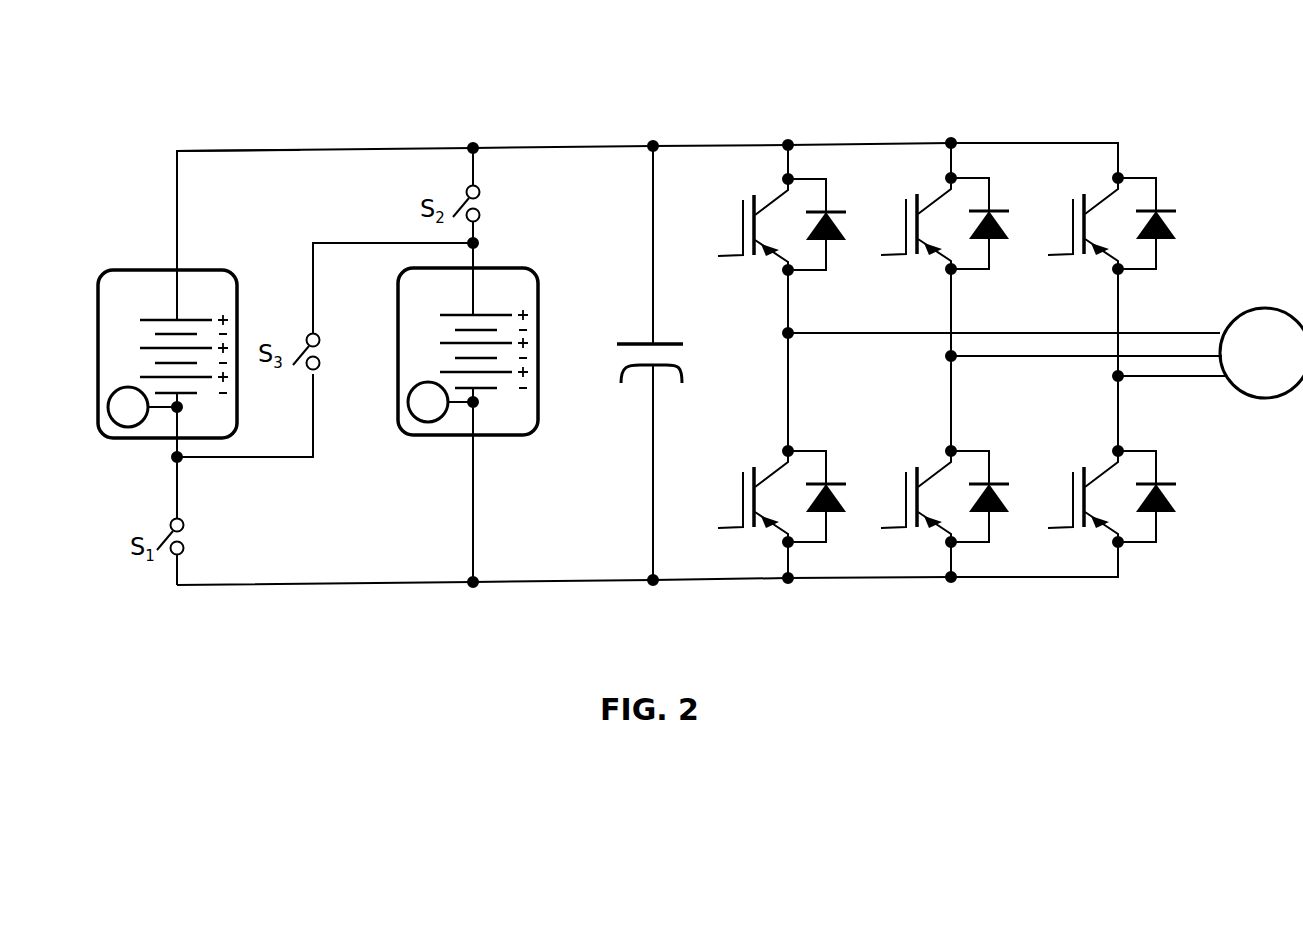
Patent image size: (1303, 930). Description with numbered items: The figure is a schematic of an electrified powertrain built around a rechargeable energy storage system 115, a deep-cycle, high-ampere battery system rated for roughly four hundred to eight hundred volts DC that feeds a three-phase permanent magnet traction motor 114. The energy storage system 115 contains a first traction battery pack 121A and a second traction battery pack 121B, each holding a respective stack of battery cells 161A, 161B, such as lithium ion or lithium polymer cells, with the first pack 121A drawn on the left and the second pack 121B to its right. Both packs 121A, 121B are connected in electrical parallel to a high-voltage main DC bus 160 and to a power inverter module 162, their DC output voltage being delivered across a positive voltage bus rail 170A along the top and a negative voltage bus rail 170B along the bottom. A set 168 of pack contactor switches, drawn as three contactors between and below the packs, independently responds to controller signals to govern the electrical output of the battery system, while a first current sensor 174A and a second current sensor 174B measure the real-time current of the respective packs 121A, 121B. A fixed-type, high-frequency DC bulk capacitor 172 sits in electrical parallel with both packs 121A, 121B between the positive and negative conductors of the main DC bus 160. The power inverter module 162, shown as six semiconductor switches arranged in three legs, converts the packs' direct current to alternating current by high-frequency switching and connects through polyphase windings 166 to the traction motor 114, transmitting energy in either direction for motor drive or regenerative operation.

The traction motor 114 is at (1290, 310).
The rechargeable energy storage system 115 is at (196, 137).
The first traction battery pack 121A is at (95, 312).
The second traction battery pack 121B is at (541, 306).
The high-voltage main DC bus 160 is at (610, 130).
The stack of battery cells 161A is at (200, 303).
The stack of battery cells 161B is at (503, 303).
The power inverter module 162 is at (894, 127).
The polyphase windings 166 is at (1211, 298).
The set of pack contactor switches 168 is at (293, 166).
The positive voltage bus rail 170A is at (685, 145).
The negative voltage bus rail 170B is at (690, 582).
The DC bulk capacitor 172 is at (628, 400).
The first current sensor 174A is at (125, 428).
The second current sensor 174B is at (424, 424).